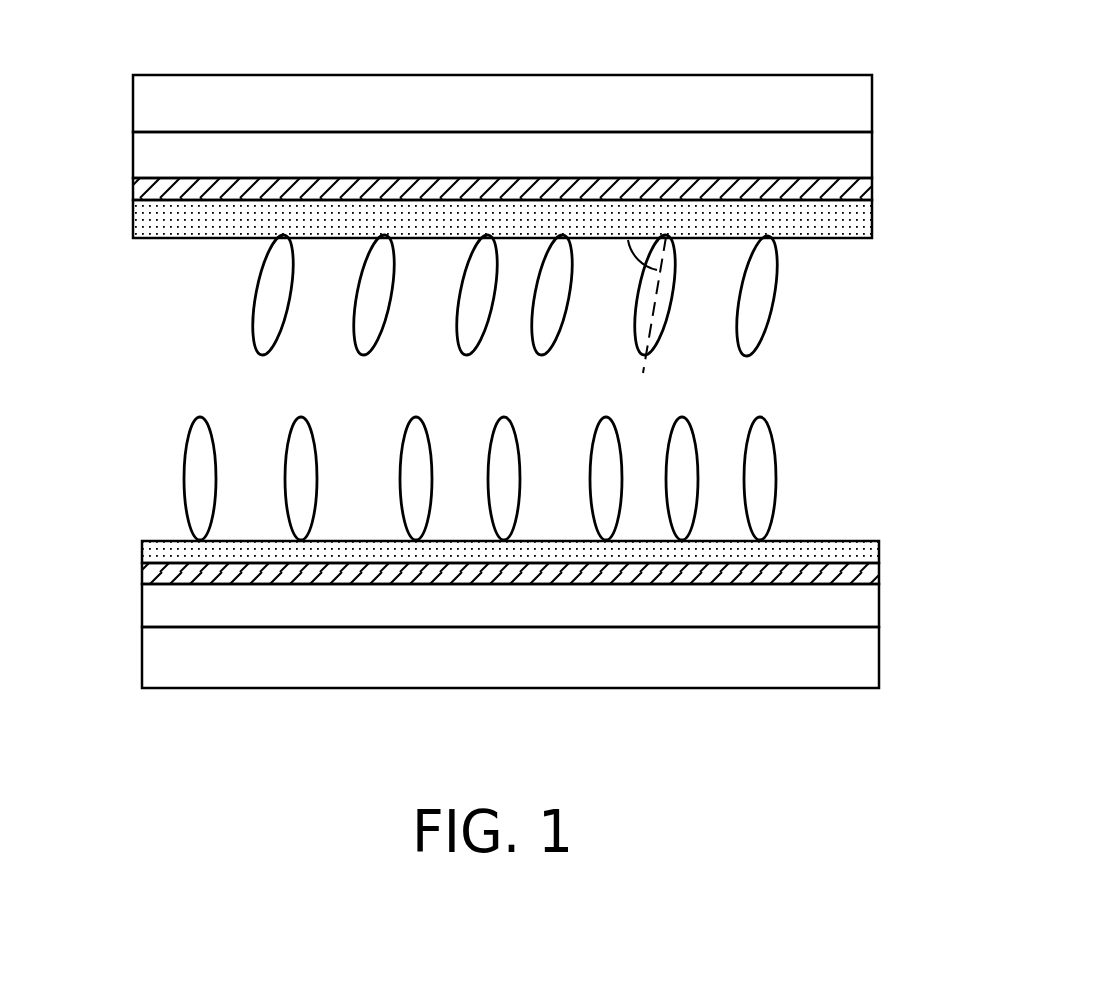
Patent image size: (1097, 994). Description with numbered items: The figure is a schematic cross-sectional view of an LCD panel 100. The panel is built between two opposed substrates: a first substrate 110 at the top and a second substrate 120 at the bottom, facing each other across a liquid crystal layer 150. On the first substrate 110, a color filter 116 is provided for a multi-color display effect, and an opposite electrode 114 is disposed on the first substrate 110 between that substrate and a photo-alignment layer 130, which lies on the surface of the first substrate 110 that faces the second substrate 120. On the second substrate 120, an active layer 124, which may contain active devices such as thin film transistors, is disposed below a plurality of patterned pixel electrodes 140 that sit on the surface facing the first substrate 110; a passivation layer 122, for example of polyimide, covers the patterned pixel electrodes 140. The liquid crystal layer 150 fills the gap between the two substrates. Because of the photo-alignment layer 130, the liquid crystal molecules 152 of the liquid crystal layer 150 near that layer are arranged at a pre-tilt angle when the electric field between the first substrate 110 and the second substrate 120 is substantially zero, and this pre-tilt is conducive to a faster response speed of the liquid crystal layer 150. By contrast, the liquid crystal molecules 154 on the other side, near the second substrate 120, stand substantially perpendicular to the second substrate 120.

The LCD panel 100 is at (599, 409).
The first substrate 110 is at (848, 100).
The color filter 116 is at (852, 157).
The opposite electrode 114 is at (862, 192).
The photo-alignment layer 130 is at (858, 225).
The liquid crystal layer 150 is at (625, 386).
The liquid crystal molecules 152 is at (760, 305).
The liquid crystal molecules 154 is at (763, 493).
The second substrate 120 is at (865, 663).
The active layer 124 is at (860, 608).
The patterned pixel electrodes 140 is at (862, 577).
The passivation layer 122 is at (860, 553).